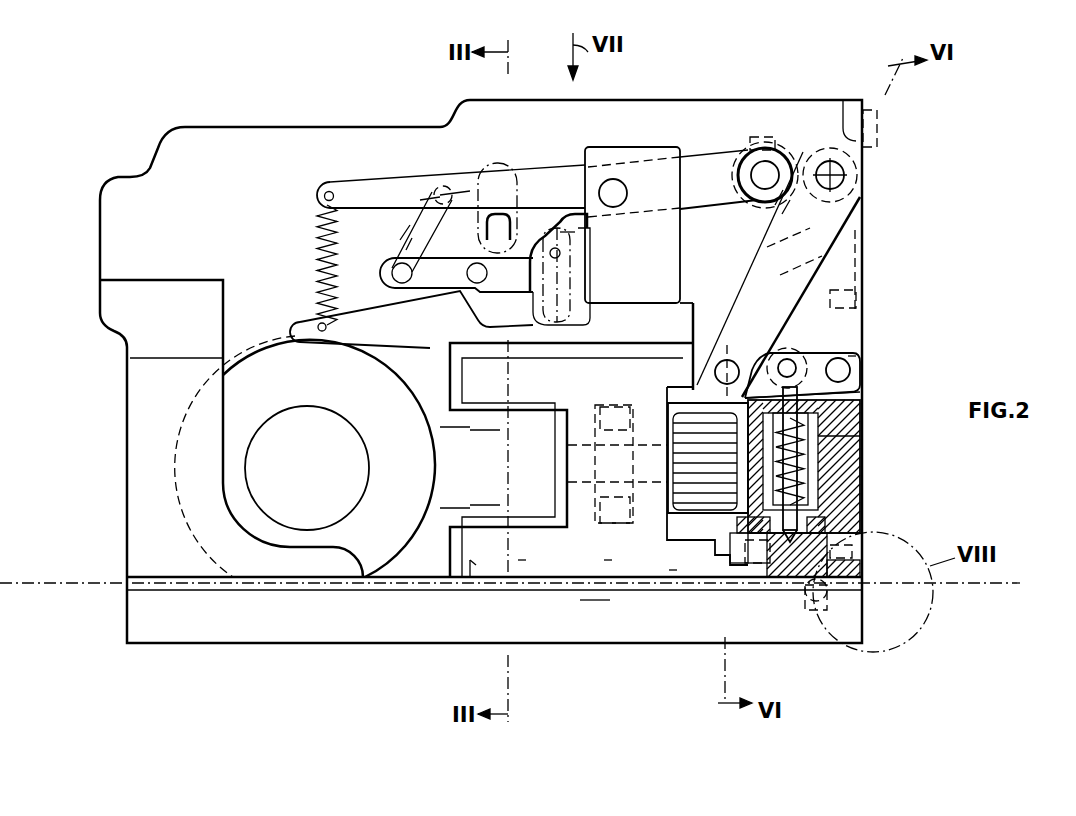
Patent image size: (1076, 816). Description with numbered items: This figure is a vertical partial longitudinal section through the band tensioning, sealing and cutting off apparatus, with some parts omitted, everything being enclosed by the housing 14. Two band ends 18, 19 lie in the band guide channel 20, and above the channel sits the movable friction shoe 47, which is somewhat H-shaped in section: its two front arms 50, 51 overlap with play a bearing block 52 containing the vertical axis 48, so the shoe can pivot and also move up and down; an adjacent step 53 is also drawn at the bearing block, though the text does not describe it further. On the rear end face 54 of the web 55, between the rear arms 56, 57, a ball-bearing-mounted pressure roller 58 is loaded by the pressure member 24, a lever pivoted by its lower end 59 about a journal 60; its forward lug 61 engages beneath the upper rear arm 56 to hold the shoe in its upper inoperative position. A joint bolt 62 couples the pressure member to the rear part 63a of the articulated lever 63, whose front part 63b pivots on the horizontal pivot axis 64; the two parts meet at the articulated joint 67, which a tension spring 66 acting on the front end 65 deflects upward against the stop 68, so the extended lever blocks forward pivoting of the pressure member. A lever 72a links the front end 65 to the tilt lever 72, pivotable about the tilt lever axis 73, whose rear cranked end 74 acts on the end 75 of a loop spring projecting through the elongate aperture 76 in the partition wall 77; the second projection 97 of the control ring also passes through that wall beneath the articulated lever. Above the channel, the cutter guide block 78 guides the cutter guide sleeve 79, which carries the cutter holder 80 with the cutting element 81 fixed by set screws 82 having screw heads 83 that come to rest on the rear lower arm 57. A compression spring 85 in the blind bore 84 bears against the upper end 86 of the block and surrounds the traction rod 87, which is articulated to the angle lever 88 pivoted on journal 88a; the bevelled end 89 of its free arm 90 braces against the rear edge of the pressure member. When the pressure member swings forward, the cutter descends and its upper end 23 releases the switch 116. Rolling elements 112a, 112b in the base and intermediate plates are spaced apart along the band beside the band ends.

The housing 14 is at (437, 583).
The upper band end 18 is at (613, 605).
The lower band end 19 is at (608, 560).
The band guide channel 20 is at (233, 585).
The upper end of pressure member 23 is at (862, 165).
The pressure member 24 is at (820, 250).
The movable friction shoe 47 is at (476, 565).
The vertical axis 48 is at (522, 560).
The front arm 50 is at (553, 392).
The front arm 51 is at (564, 562).
The bearing block 52 is at (543, 474).
The step 53 is at (482, 517).
The rear end face 54 is at (662, 357).
The web 55 is at (666, 509).
The upper rear arm 56 is at (686, 357).
The rear lower arm 57 is at (673, 570).
The pressure roller 58 is at (850, 367).
The lower end of pressure member 59 is at (800, 360).
The journal 60 is at (730, 360).
The lug 61 is at (676, 408).
The joint bolt 62 is at (840, 178).
The articulated lever 63 is at (706, 165).
The rear part of articulated lever 63a is at (800, 165).
The front part of articulated lever 63b is at (550, 178).
The pivot axis 64 is at (616, 180).
The front end of articulated lever 65 is at (356, 185).
The tension spring 66 is at (310, 262).
The articulated joint 67 is at (787, 165).
The stop 68 is at (767, 135).
The tilt lever 72 is at (465, 340).
The lever 72a is at (405, 232).
The tilt lever axis 73 is at (460, 305).
The rear cranked end 74 is at (570, 233).
The end of loop spring 75 is at (540, 270).
The elongate aperture 76 is at (565, 285).
The partition wall 77 is at (672, 286).
The cutter guide block 78 is at (848, 462).
The cutter guide sleeve 79 is at (822, 478).
The cutter holder 80 is at (833, 523).
The cutting element 81 is at (750, 560).
The set screws 82 is at (830, 530).
The screw heads 83 is at (740, 560).
The blind bore 84 is at (810, 428).
The compression spring 85 is at (825, 500).
The upper end of cutter guide block 86 is at (860, 392).
The traction rod 87 is at (848, 440).
The angle lever 88 is at (840, 290).
The journal 88a is at (910, 360).
The bevelled end 89 is at (862, 225).
The free arm 90 is at (857, 270).
The second projection 97 is at (488, 222).
The rolling elements 112a is at (835, 590).
The rolling elements 112b is at (860, 567).
The switch 116 is at (880, 140).